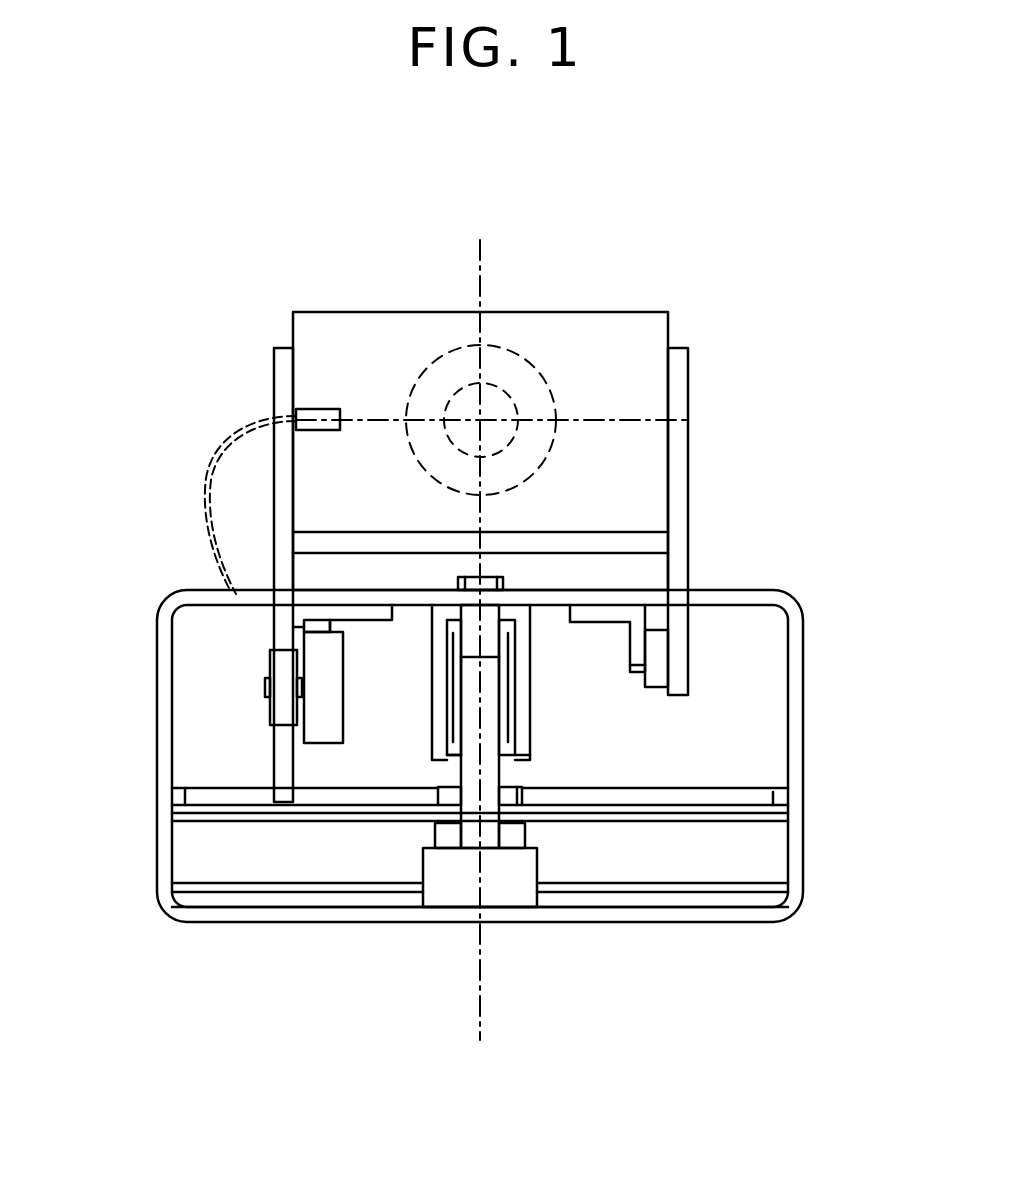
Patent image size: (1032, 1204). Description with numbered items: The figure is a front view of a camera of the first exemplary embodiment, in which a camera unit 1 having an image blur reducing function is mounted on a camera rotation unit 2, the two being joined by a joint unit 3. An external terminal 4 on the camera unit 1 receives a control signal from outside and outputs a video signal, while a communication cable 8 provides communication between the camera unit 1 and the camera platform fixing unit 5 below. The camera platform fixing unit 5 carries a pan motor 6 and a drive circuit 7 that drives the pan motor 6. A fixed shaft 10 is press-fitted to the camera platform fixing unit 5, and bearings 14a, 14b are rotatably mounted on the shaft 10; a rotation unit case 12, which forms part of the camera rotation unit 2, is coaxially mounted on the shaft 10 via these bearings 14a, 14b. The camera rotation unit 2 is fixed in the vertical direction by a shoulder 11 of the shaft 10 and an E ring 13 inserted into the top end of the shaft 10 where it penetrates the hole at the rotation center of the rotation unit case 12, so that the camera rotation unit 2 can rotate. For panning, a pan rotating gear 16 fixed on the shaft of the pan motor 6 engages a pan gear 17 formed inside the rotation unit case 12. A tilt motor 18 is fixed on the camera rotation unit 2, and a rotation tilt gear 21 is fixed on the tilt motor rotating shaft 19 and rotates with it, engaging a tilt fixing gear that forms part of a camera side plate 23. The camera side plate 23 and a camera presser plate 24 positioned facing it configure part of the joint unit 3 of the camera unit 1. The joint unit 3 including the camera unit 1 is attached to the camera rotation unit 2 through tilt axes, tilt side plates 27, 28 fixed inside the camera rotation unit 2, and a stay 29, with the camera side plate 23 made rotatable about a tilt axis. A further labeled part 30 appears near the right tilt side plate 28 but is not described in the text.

The camera unit 1 is at (653, 337).
The camera rotation unit 2 is at (705, 622).
The joint unit 3 is at (643, 542).
The external terminal 4 is at (322, 408).
The camera platform fixing unit 5 is at (443, 923).
The pan motor 6 is at (483, 830).
The drive circuit 7 is at (207, 883).
The communication cable 8 is at (205, 458).
The fixed shaft 10 is at (507, 830).
The shoulder 11 is at (522, 757).
The rotation unit case 12 is at (522, 733).
The E ring 13 is at (505, 590).
The bearing 14a is at (450, 633).
The bearing 14b is at (448, 798).
The pan rotating gear 16 is at (423, 850).
The pan gear 17 is at (200, 796).
The tilt motor 18 is at (447, 757).
The tilt motor rotating shaft 19 is at (313, 713).
The rotation tilt gear 21 is at (267, 680).
The camera side plate 23 is at (275, 362).
The camera presser plate 24 is at (673, 393).
The tilt side plate 27 is at (287, 673).
The tilt side plate 28 is at (660, 662).
The stay 29 is at (322, 615).
The screw 30 is at (637, 665).